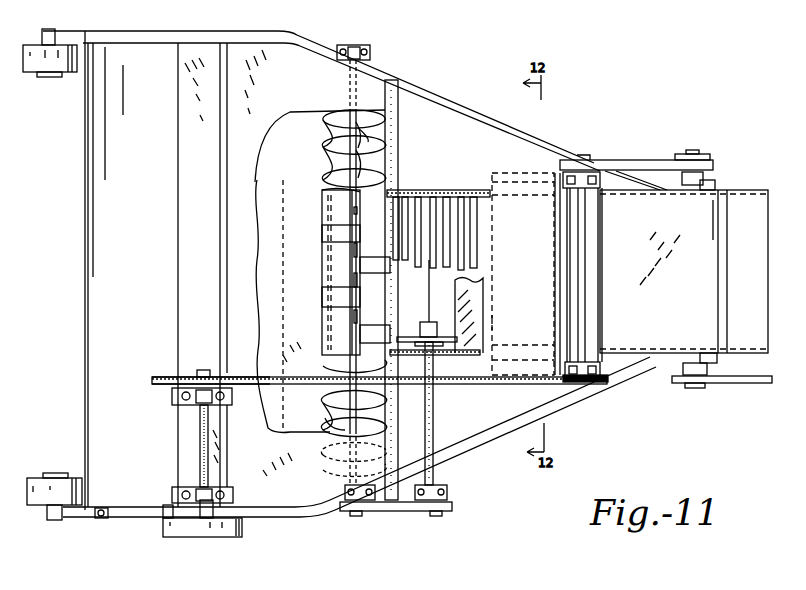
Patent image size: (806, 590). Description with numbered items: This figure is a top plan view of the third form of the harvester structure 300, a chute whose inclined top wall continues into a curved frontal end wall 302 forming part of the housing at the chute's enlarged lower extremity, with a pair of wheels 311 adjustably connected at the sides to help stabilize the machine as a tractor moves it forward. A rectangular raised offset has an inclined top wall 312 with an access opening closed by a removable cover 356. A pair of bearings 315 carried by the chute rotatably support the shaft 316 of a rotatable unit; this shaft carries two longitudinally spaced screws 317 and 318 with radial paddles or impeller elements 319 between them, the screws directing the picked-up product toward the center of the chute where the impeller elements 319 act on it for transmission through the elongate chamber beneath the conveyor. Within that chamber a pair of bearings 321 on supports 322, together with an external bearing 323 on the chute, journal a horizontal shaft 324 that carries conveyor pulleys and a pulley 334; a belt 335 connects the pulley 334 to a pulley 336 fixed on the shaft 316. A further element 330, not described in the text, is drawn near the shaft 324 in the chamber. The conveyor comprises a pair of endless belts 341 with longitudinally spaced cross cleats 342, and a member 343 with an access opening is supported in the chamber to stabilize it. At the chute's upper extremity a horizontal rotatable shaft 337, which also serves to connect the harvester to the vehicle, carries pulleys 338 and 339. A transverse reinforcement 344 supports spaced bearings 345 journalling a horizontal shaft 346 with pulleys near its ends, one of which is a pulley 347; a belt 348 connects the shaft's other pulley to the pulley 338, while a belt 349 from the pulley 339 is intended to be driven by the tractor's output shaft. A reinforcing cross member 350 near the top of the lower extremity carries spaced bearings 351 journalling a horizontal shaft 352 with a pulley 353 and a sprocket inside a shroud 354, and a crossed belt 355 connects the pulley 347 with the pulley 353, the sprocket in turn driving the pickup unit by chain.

The harvester structure 300 is at (416, 60).
The curved frontal end wall 302 is at (100, 308).
The wheels 311 is at (33, 64).
The inclined top wall of offset 312 is at (712, 316).
The bearings 315 is at (355, 50).
The rotatable shaft 316 is at (350, 162).
The screw 317 is at (377, 163).
The screw 318 is at (330, 425).
The radial paddles or impeller elements 319 is at (372, 265).
The bearings 321 is at (423, 195).
The supports 322 is at (460, 280).
The external bearing 323 is at (447, 490).
The horizontal shaft 324 is at (433, 408).
The bracket 330 is at (420, 333).
The pulley 334 is at (443, 513).
The belt 335 is at (405, 511).
The pulley 336 is at (352, 513).
The horizontal rotatable shaft 337 is at (690, 157).
The pulley 338 is at (705, 172).
The pulley 339 is at (703, 388).
The endless belts 341 is at (425, 213).
The cross cleats or abutments 342 is at (420, 240).
The member 343 is at (475, 302).
The transverse reinforcement 344 is at (598, 285).
The bearings 345 is at (585, 188).
The horizontal shaft 346 is at (585, 325).
The pulley 347 is at (600, 384).
The belt 348 is at (647, 160).
The belt 349 is at (740, 384).
The reinforcing cross member 350 is at (190, 333).
The bearings 351 is at (197, 397).
The horizontal shaft 352 is at (200, 443).
The pulley 353 is at (158, 387).
The shroud 354 is at (197, 530).
The crossed belt 355 is at (475, 386).
The removable cover 356 is at (530, 183).